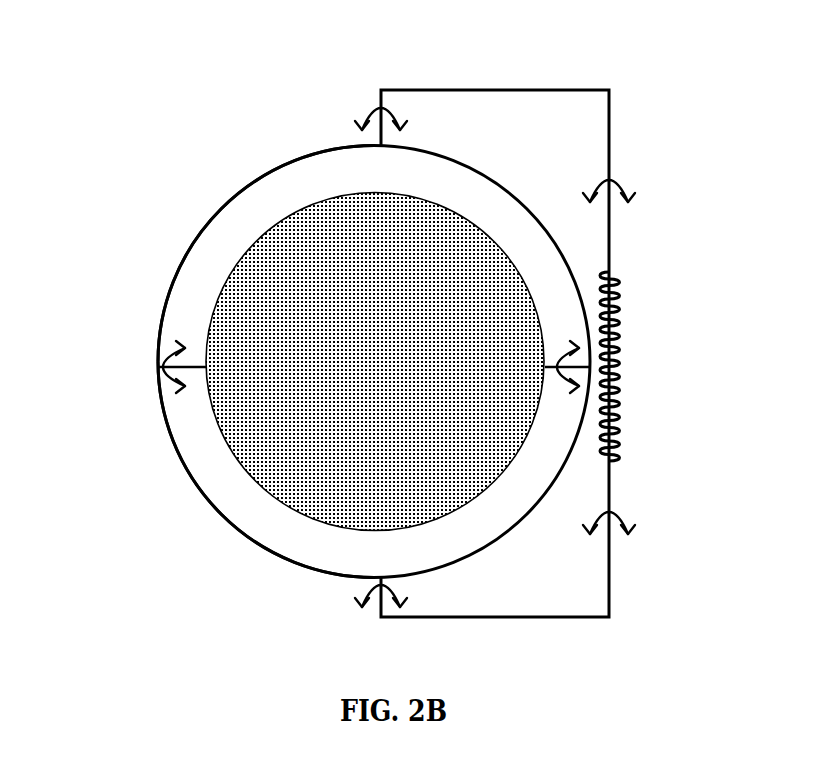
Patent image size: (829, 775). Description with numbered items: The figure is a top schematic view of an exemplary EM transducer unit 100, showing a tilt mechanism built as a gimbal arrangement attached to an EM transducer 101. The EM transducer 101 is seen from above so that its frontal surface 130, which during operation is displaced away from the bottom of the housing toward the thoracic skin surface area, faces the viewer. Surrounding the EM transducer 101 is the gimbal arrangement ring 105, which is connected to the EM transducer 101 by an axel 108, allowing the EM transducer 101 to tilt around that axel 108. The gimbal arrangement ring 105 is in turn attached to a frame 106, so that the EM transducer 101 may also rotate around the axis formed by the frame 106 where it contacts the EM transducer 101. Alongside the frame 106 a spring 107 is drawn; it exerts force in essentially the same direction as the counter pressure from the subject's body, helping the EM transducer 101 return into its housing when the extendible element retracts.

The EM transducer unit 100 is at (161, 118).
The EM transducer 101 is at (253, 240).
The gimbal arrangement ring 105 is at (172, 292).
The frame 106 is at (494, 88).
The spring 107 is at (633, 342).
The axel 108 is at (162, 365).
The frontal surface 130 is at (318, 243).